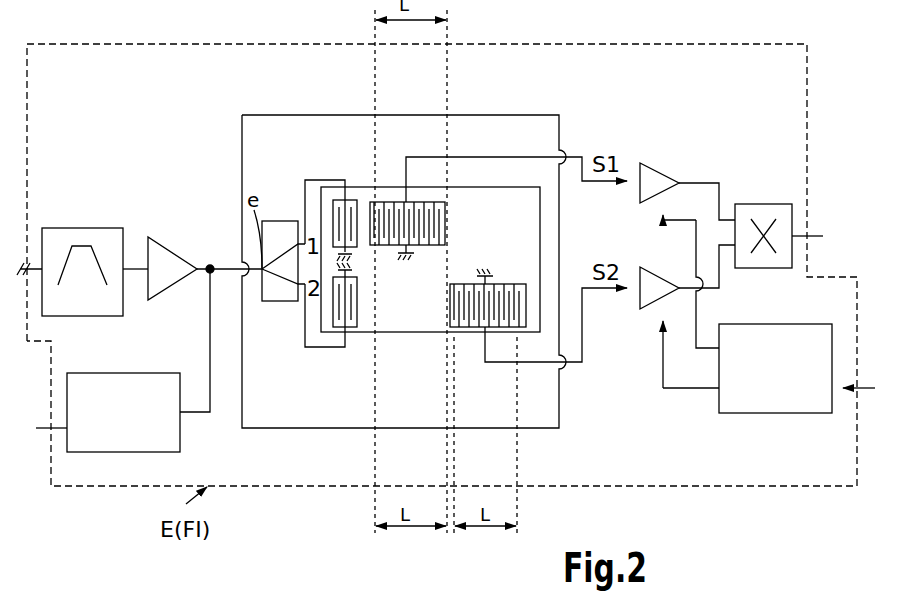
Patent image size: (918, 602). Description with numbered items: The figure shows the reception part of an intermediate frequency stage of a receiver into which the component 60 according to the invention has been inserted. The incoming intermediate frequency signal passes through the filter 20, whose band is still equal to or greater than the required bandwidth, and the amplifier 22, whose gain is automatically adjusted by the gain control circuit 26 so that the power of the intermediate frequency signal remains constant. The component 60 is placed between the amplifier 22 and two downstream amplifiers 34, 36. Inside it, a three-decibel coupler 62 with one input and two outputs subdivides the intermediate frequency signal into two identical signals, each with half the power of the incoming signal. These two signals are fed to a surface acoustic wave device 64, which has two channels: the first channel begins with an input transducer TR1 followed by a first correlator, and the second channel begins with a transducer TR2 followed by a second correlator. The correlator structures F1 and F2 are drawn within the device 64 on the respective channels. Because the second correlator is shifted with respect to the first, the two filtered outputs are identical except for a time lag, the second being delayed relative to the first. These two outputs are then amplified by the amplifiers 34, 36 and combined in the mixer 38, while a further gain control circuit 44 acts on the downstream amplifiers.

The filter 20 is at (60, 236).
The amplifier 22 is at (168, 258).
The gain control circuit 26 is at (88, 383).
The component 60 is at (285, 112).
The 3 dB coupler 62 is at (277, 218).
The surface acoustic wave device 64 is at (359, 341).
The input transducer TR1 is at (352, 210).
The transducer TR2 is at (357, 318).
The first filter transducer F1 is at (392, 212).
The second filter transducer F2 is at (494, 305).
The amplifier 34 is at (665, 178).
The amplifier 36 is at (653, 283).
The mixer 38 is at (760, 216).
The gain control 44 is at (770, 333).